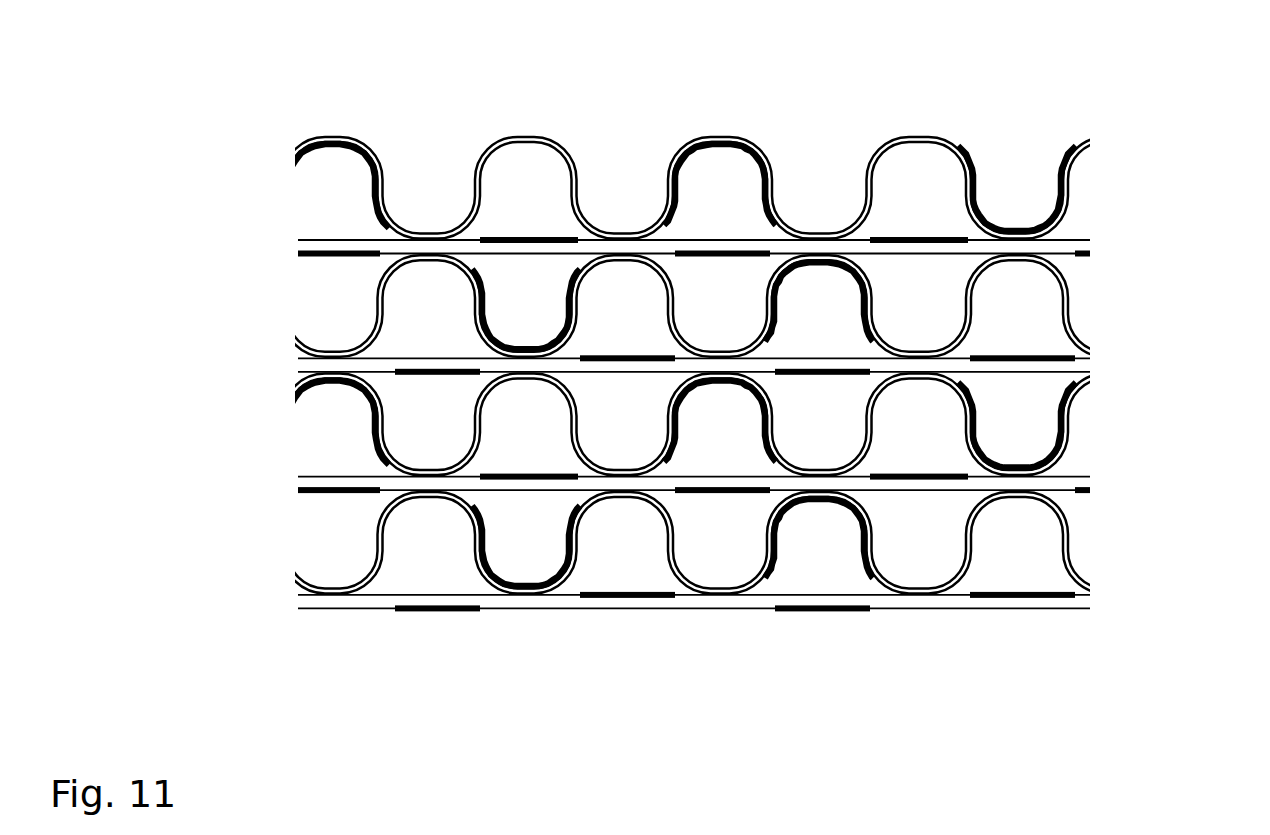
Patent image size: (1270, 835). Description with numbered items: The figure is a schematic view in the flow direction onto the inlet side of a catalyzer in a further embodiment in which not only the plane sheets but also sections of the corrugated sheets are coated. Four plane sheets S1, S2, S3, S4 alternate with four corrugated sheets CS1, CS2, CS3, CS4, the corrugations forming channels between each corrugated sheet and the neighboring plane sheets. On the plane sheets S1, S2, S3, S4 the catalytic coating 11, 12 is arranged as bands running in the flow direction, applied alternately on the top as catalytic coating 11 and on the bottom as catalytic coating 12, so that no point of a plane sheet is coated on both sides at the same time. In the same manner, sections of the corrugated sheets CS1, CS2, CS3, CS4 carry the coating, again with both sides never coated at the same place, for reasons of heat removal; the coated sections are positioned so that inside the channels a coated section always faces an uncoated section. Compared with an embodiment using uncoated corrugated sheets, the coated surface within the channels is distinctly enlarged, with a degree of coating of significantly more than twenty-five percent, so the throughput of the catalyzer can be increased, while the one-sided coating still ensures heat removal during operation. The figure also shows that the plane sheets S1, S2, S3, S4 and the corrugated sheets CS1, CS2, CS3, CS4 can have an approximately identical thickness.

The catalytic coating 11 is at (933, 235).
The catalytic coating 12 is at (732, 157).
The corrugated sheet CS1 is at (1063, 190).
The corrugated sheet CS2 is at (1063, 307).
The corrugated sheet CS3 is at (1063, 424).
The corrugated sheet CS4 is at (1063, 542).
The plane sheet S1 is at (1057, 246).
The plane sheet S2 is at (1057, 362).
The plane sheet S3 is at (1057, 479).
The plane sheet S4 is at (1057, 597).